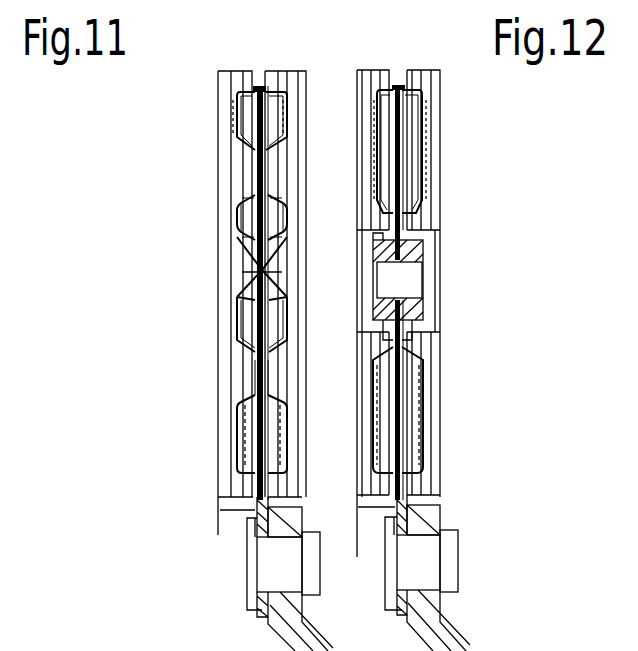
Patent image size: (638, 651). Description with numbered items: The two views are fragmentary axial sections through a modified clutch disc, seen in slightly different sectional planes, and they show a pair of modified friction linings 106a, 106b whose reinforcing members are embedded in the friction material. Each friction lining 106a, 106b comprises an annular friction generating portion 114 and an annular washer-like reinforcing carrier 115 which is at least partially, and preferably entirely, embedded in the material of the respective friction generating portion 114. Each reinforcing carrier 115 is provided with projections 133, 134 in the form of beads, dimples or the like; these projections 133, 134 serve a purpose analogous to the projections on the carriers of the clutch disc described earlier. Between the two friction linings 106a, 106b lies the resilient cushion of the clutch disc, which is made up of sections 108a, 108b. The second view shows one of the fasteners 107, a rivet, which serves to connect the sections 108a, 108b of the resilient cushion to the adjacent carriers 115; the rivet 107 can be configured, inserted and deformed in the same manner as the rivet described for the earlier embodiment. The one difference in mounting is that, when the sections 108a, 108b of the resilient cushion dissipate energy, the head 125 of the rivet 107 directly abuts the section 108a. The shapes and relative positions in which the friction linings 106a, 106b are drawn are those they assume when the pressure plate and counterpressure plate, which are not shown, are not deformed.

In FIG. 11, the friction lining 106a is at (218, 82).
In FIG. 11, the friction lining 106b is at (300, 88).
In FIG. 12, the fastener 107 is at (392, 306).
In FIG. 11, the section of the resilient cushion 108a is at (265, 362).
In FIG. 12, the section of the resilient cushion 108a is at (398, 131).
In FIG. 11, the section of the resilient cushion 108b is at (257, 437).
In FIG. 12, the section of the resilient cushion 108b is at (398, 164).
In FIG. 11, the annular friction generating portion 114 is at (300, 88).
In FIG. 11, the reinforcing carrier 115 is at (240, 140).
In FIG. 12, the head of the rivet 125 is at (392, 327).
In FIG. 11, the projection 133 is at (260, 271).
In FIG. 11, the projection 134 is at (284, 283).